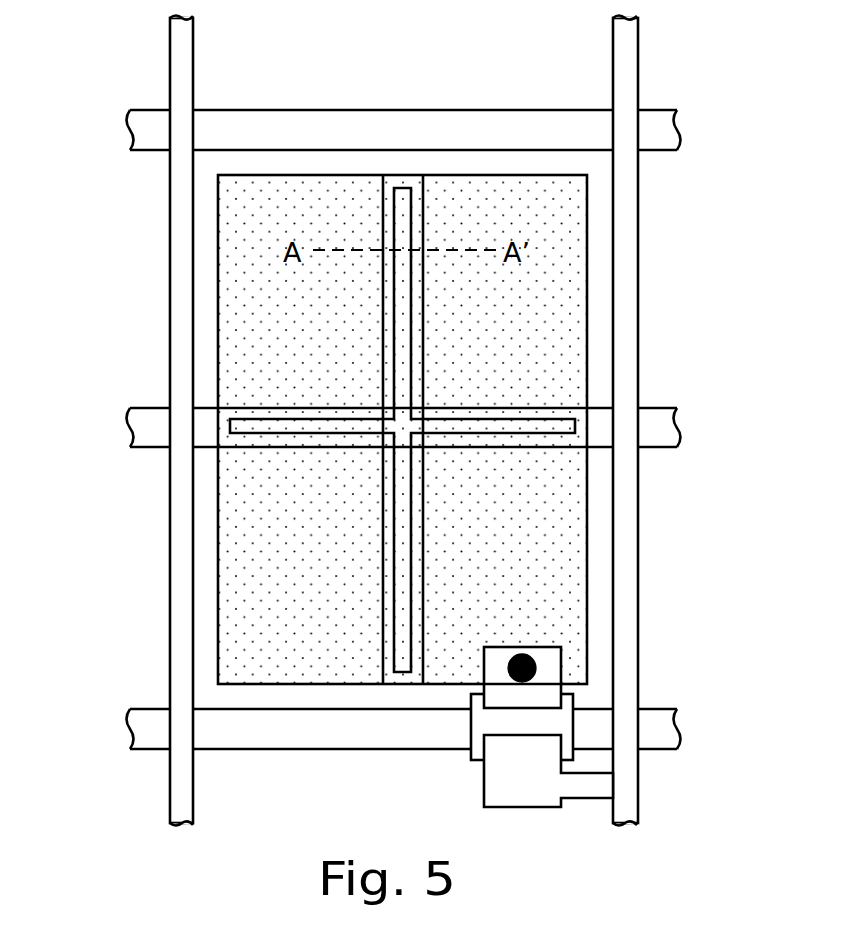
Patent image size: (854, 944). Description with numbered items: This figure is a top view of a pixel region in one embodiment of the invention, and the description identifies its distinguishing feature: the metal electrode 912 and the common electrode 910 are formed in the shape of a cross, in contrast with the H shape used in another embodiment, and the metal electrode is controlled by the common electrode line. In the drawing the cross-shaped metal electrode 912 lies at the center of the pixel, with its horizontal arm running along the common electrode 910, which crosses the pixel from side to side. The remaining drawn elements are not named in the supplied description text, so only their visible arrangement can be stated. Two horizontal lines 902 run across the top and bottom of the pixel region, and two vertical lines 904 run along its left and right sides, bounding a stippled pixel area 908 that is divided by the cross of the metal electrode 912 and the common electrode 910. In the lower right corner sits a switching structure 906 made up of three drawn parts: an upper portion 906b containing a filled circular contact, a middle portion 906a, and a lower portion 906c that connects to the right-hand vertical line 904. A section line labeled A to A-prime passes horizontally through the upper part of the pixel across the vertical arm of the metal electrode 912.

The gate line 902 is at (668, 132).
The data line 904 is at (185, 30).
The thin film transistor 906 is at (650, 727).
The gate electrode / active layer 906a is at (550, 723).
The drain electrode with contact hole 906b is at (545, 684).
The source electrode 906c is at (550, 785).
The pixel electrode 908 is at (218, 328).
The common electrode 910 is at (668, 423).
The metal electrode 912 is at (403, 187).